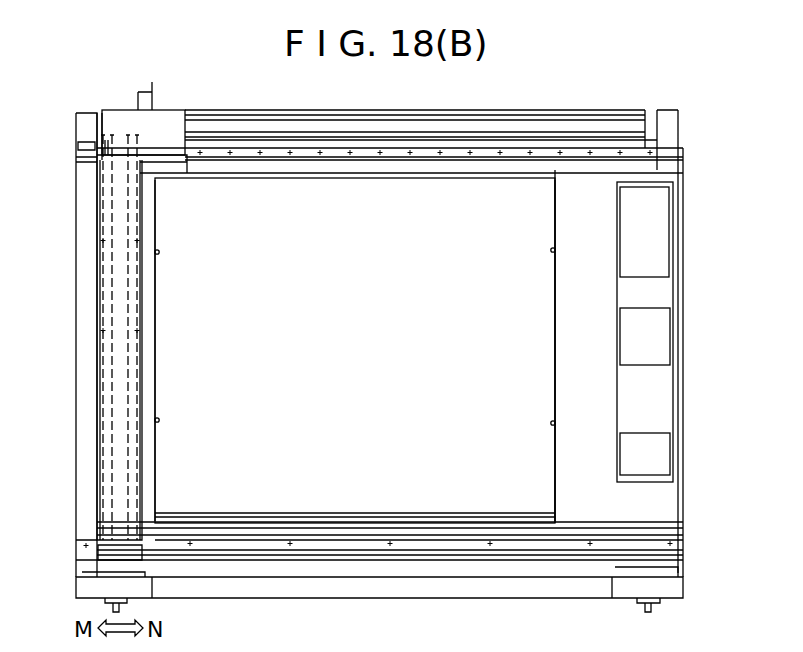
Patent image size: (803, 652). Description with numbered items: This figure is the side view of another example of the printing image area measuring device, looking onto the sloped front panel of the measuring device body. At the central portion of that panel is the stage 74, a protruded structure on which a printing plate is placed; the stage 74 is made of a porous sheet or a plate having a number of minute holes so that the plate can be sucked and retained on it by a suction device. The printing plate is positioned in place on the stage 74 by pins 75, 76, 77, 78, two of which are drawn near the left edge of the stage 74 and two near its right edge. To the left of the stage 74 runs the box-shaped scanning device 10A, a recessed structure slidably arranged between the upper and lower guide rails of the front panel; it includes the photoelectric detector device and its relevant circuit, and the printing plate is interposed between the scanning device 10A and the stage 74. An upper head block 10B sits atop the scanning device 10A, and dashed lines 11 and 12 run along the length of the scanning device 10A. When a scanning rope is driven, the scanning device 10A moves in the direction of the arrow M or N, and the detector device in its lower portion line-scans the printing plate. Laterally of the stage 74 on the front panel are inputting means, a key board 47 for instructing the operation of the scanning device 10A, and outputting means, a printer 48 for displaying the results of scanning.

The scanning device 10A is at (110, 336).
The carriage head block 10B is at (172, 108).
The guide rod 11 is at (100, 360).
The guide rod 12 is at (138, 357).
The key board 47 is at (665, 236).
The printer 48 is at (665, 347).
The stage 74 is at (542, 463).
The pin 75 is at (159, 252).
The pin 76 is at (158, 422).
The pin 77 is at (551, 250).
The pin 78 is at (551, 423).